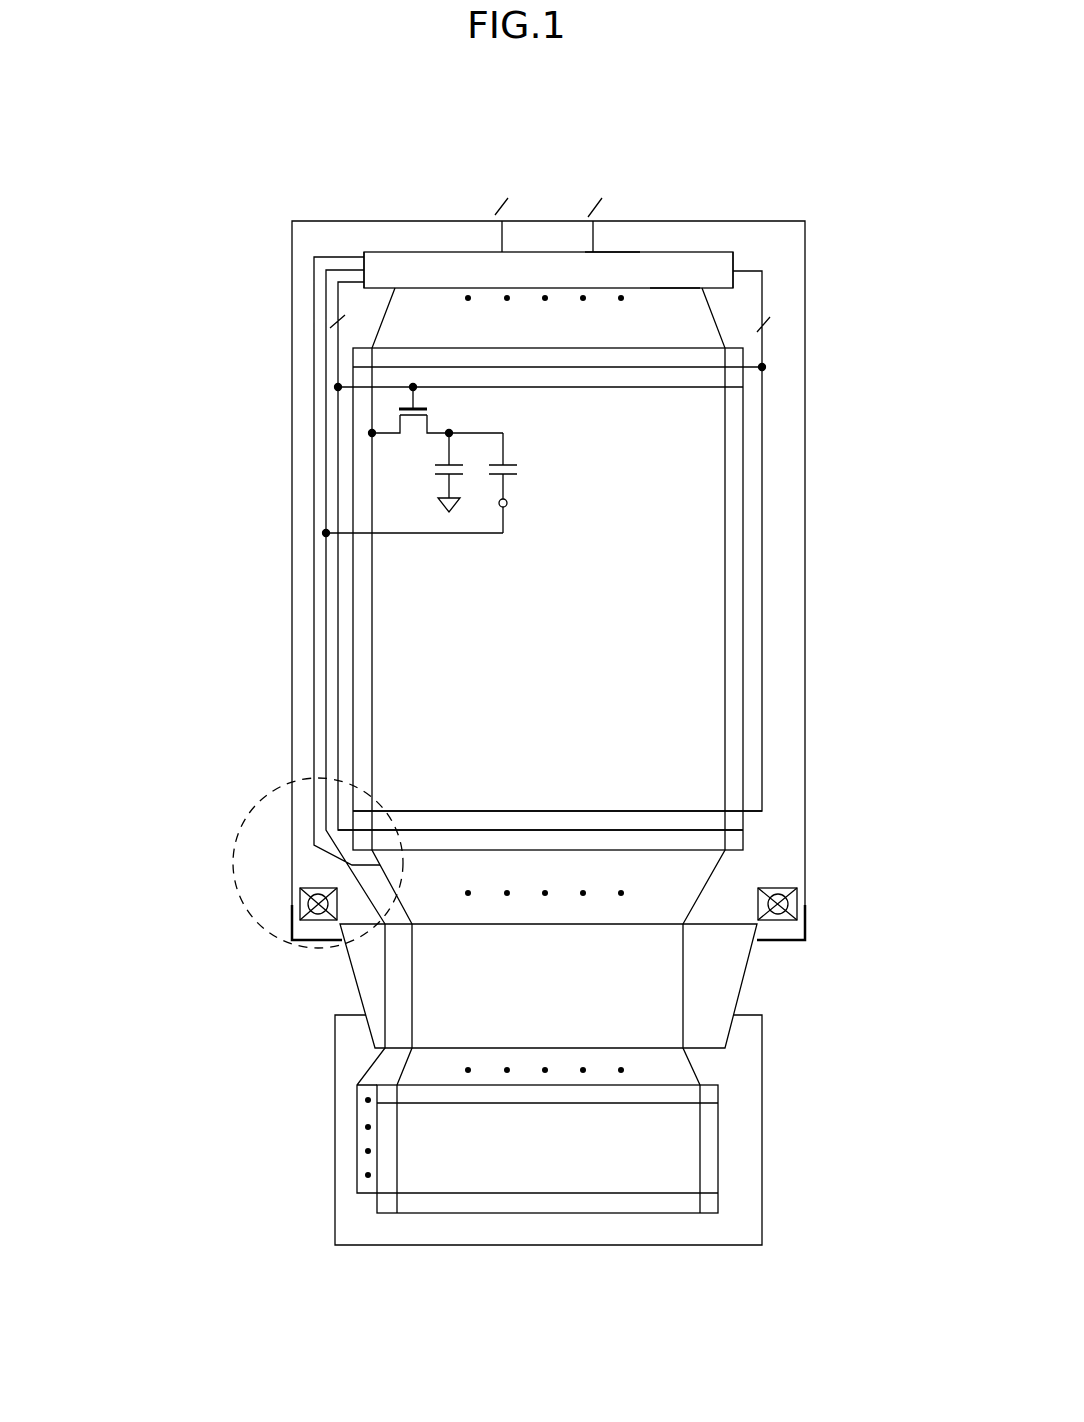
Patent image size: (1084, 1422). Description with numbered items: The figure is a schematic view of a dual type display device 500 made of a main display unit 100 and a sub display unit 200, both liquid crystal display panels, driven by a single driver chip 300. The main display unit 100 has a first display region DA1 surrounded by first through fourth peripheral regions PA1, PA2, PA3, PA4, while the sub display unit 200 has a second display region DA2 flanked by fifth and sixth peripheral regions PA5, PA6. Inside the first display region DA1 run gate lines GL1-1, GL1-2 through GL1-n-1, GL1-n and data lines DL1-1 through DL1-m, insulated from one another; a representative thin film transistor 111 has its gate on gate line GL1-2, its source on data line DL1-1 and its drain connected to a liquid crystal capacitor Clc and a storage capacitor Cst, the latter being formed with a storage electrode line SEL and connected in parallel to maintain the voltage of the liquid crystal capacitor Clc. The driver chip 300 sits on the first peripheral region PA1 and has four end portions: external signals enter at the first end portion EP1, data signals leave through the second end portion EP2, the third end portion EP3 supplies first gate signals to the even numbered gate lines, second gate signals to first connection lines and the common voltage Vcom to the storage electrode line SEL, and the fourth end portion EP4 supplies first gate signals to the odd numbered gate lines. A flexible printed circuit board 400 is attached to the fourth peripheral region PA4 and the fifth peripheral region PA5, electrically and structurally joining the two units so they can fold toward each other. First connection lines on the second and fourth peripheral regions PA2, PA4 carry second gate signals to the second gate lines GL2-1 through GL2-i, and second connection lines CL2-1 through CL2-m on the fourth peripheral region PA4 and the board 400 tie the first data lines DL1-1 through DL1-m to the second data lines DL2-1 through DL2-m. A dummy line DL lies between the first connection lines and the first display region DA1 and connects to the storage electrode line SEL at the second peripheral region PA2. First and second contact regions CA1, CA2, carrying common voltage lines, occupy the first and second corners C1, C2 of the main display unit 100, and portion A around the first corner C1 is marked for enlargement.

The main display unit 100 is at (805, 400).
The sub display unit 200 is at (762, 1215).
The driver chip 300 is at (677, 252).
The flexible printed circuit board 400 is at (745, 977).
The display device 500 is at (572, 145).
The thin film transistor 111 is at (443, 402).
The first end portion EP1 is at (626, 244).
The second end portion EP2 is at (671, 295).
The third end portion EP3 is at (360, 261).
The fourth end portion EP4 is at (737, 261).
The first peripheral region PA1 is at (398, 232).
The second peripheral region PA2 is at (300, 556).
The third peripheral region PA3 is at (757, 568).
The fourth peripheral region PA4 is at (751, 874).
The fifth peripheral region PA5 is at (736, 1084).
The sixth peripheral region PA6 is at (346, 1158).
The dummy line DL is at (326, 722).
The first gate line GL1-1 is at (605, 367).
The second gate line GL1-2 is at (677, 388).
The (n-1)th gate line GL1-n-1 is at (425, 811).
The nth gate line GL1-n is at (578, 829).
The first data line DL1-1 is at (373, 687).
The mth data line DL1-m is at (725, 687).
The liquid crystal capacitor Clc is at (431, 484).
The storage capacitor Cst is at (523, 458).
The common voltage Vcom is at (538, 505).
The storage electrode line SEL is at (458, 535).
The first display region DA1 is at (704, 638).
The second display region DA2 is at (641, 1172).
The portion A is at (236, 833).
The first contact region CA1 is at (298, 908).
The second contact region CA2 is at (800, 907).
The first corner C1 is at (288, 945).
The second corner C2 is at (813, 945).
The first second-connection line CL2-1 is at (413, 955).
The mth second-connection line CL2-m is at (683, 1005).
The first second data line DL2-1 is at (397, 1125).
The mth second data line DL2-m is at (700, 1163).
The first second gate line GL2-1 is at (538, 1104).
The ith second gate line GL2-i is at (433, 1192).